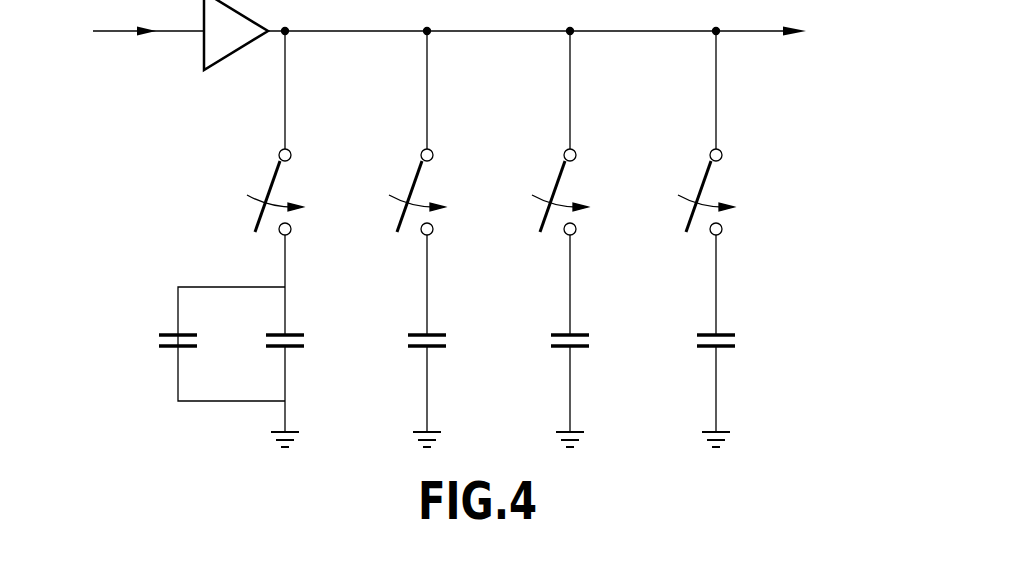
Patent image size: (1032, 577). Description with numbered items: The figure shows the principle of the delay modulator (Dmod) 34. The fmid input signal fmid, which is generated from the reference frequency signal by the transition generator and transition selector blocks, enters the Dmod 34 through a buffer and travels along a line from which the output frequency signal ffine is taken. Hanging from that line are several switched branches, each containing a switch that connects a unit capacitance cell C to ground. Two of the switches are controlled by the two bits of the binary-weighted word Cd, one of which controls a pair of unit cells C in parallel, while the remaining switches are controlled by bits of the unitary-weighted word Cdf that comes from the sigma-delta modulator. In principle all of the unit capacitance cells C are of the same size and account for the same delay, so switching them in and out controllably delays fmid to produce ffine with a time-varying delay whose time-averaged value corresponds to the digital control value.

The delay modulator (Dmod) 34 is at (836, 197).
The fmid input signal fmid is at (113, 26).
The ffine frequency signal ffine is at (573, 36).
The unit capacitance cell C is at (468, 344).